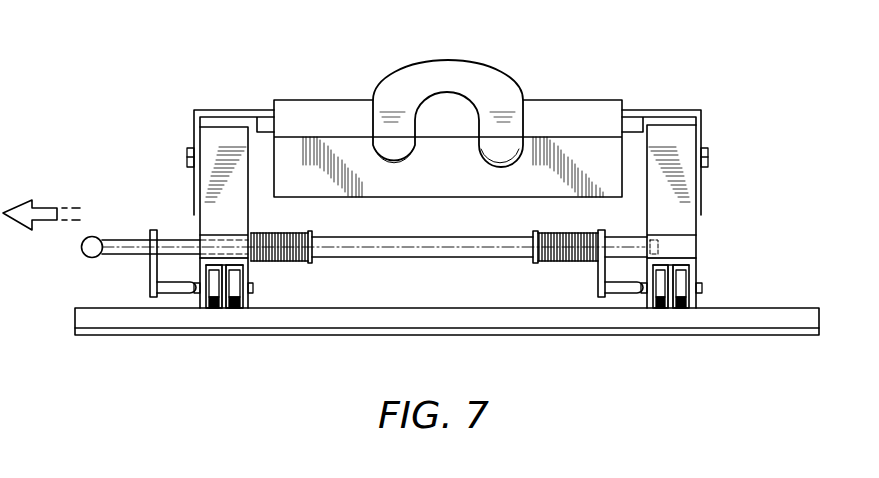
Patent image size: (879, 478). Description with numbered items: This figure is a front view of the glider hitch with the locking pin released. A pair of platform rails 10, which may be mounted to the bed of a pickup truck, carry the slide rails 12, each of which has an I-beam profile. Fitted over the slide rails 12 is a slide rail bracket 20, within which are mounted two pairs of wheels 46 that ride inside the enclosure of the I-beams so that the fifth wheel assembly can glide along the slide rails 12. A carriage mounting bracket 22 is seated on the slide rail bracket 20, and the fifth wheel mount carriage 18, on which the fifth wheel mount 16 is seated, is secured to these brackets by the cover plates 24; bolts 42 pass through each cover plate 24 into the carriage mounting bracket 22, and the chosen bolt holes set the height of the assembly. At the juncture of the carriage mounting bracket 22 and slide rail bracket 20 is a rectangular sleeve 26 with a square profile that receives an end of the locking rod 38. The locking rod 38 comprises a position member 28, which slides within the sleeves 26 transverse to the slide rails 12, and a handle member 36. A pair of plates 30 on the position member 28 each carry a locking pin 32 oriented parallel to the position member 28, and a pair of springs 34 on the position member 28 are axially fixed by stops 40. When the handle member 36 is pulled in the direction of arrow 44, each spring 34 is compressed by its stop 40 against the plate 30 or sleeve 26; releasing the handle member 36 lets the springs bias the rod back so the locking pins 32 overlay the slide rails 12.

The platform rails 10 is at (773, 308).
The slide rails 12 is at (224, 300).
The fifth wheel mount 16 is at (472, 70).
The fifth wheel mount carriage 18 is at (306, 106).
The slide rail bracket 20 is at (695, 266).
The carriage mounting bracket 22 is at (243, 223).
The cover plate 24 is at (228, 111).
The rectangular sleeve 26 is at (205, 247).
The position member 28 is at (402, 257).
The plate 30 is at (150, 268).
The locking pin 32 is at (176, 297).
The spring 34 is at (259, 260).
The handle member 36 is at (83, 252).
The locking rod 38 is at (135, 212).
The stop 40 is at (310, 232).
The bolt 42 is at (186, 158).
The arrow 44 is at (22, 198).
The wheels 46 is at (213, 298).